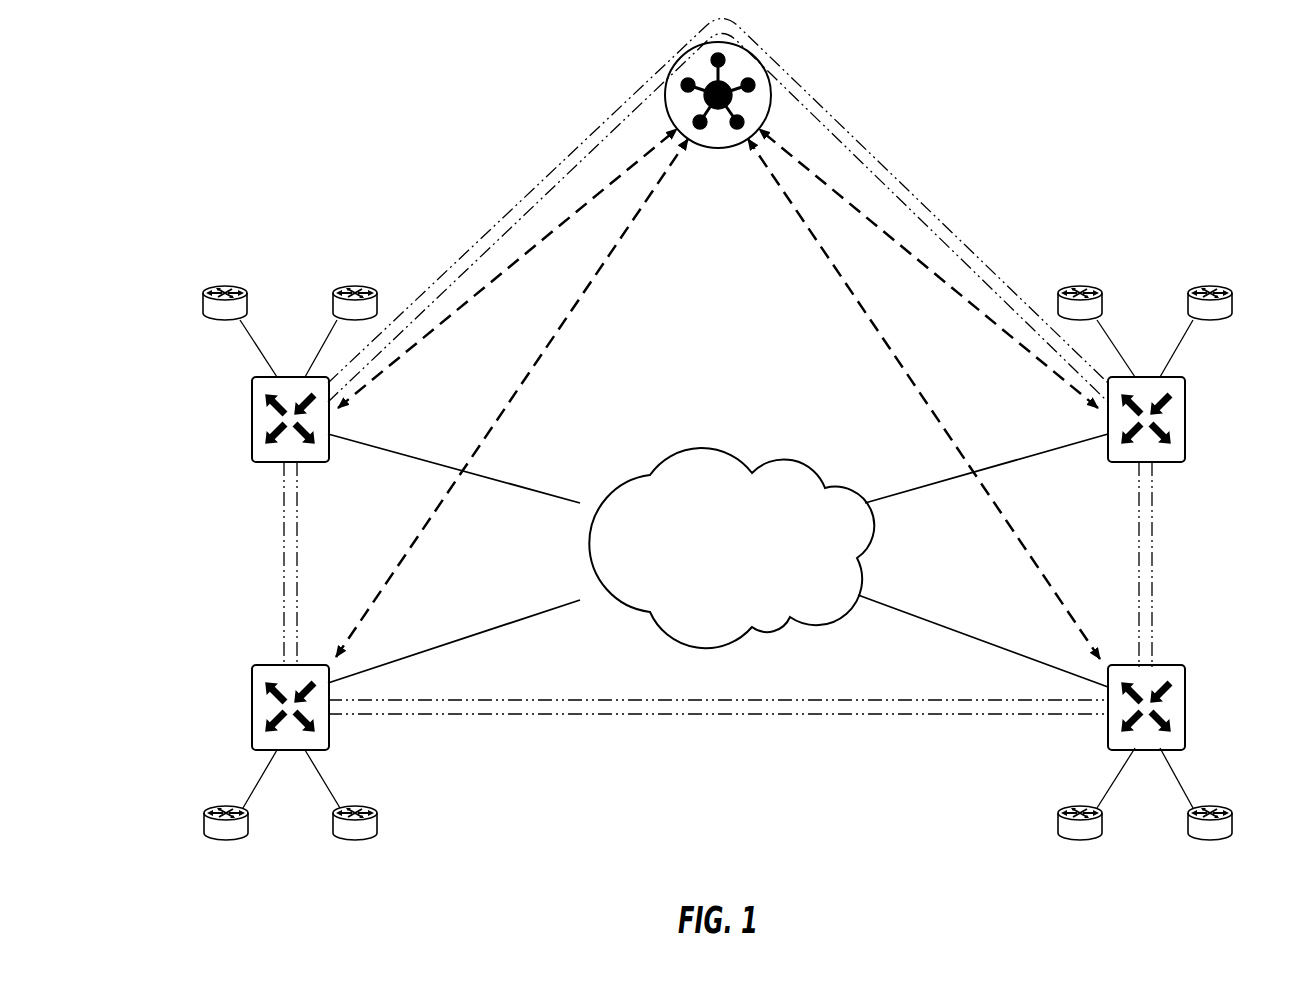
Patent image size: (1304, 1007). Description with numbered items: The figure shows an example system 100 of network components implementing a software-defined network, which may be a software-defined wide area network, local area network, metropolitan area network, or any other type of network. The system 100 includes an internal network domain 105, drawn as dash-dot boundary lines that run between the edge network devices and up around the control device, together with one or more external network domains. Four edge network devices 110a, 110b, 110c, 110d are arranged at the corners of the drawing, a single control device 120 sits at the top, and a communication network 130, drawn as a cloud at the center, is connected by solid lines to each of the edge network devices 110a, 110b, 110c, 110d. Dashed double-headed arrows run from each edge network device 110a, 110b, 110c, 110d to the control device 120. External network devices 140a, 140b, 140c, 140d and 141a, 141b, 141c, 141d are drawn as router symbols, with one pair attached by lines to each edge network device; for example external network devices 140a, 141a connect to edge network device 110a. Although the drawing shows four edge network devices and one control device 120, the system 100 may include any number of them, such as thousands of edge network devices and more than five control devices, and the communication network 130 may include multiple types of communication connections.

The system 100 is at (1189, 84).
The internal network domain 105 is at (925, 196).
The edge network device 110a is at (252, 420).
The edge network device 110b is at (252, 707).
The edge network device 110c is at (1185, 420).
The edge network device 110d is at (1185, 707).
The control device 120 is at (771, 88).
The communication network 130 is at (732, 560).
The external network device 140a is at (226, 287).
The external network device 140b is at (226, 840).
The external network device 140c is at (1082, 287).
The external network device 140d is at (1084, 840).
The external network device 141a is at (356, 287).
The external network device 141b is at (354, 840).
The external network device 141c is at (1212, 287).
The external network device 141d is at (1214, 840).